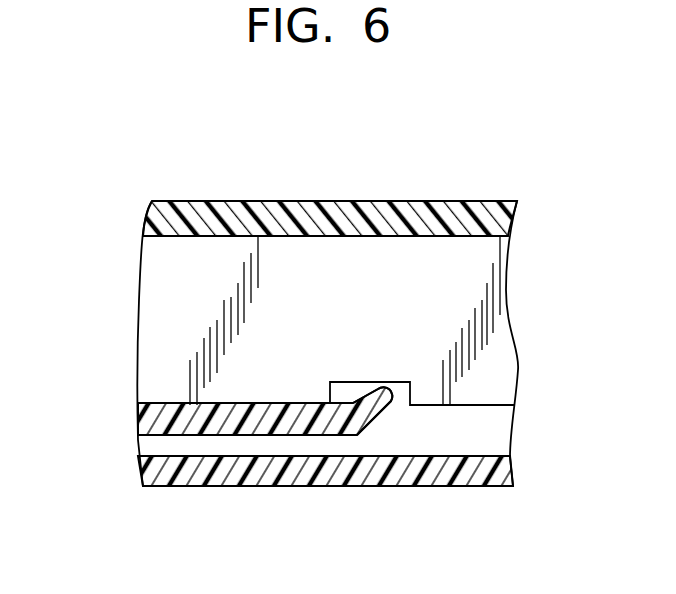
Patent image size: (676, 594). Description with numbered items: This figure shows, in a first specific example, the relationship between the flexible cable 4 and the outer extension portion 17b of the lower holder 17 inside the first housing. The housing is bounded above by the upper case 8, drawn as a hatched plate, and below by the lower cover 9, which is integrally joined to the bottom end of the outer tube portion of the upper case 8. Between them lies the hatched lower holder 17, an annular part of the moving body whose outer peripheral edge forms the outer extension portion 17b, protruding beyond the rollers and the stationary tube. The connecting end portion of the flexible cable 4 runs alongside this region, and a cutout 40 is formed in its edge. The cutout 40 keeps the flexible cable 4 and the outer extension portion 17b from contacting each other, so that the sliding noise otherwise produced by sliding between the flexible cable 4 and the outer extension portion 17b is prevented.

The upper case 8 is at (440, 194).
The flexible cable 4 is at (174, 318).
The lower holder 17 is at (233, 422).
The outer extension portion 17b is at (370, 412).
The lower cover 9 is at (322, 462).
The cutout 40 is at (411, 390).